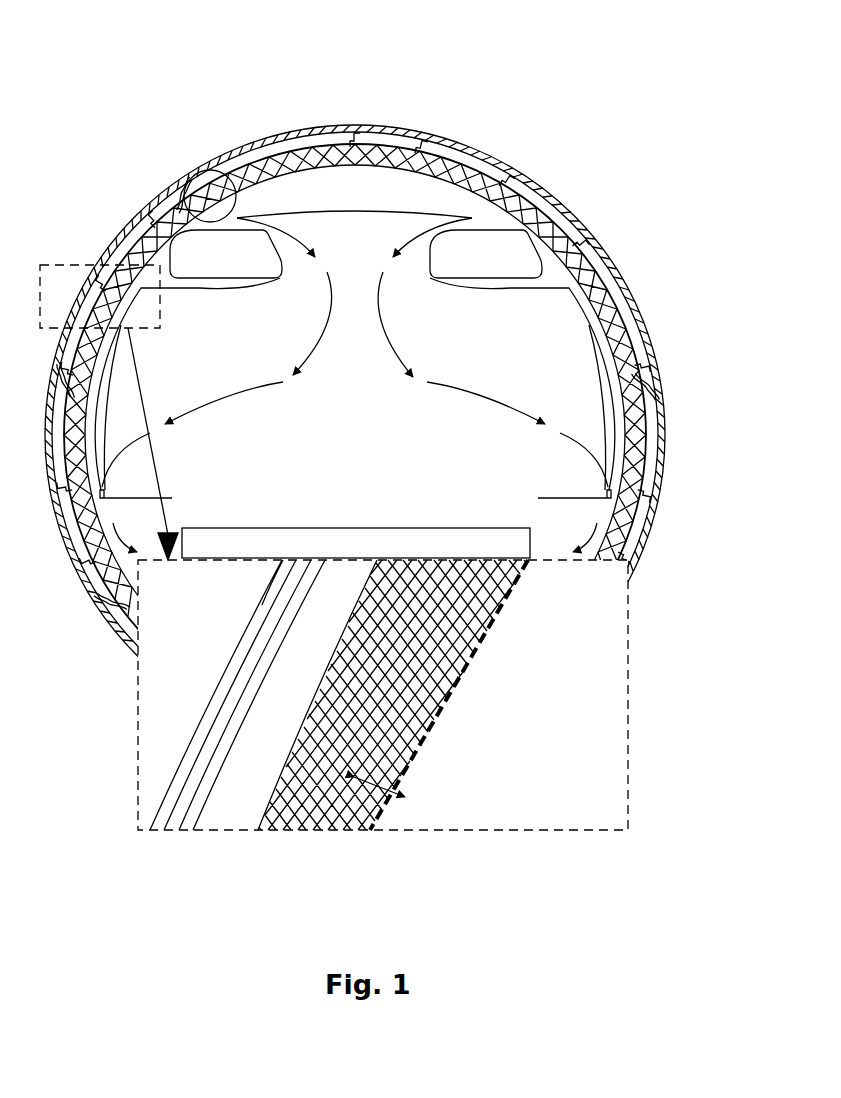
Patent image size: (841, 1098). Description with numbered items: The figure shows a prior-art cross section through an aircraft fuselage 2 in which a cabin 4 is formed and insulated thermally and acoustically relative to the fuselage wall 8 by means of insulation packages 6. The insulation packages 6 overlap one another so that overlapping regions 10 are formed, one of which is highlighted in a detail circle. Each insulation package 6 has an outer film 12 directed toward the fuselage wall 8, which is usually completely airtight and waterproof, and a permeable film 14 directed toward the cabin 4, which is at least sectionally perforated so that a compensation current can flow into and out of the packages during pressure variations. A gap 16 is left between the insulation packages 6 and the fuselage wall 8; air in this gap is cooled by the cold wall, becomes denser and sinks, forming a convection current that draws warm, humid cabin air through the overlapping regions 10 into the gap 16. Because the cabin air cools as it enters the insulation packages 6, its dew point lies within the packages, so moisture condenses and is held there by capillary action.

The aircraft fuselage 2 is at (533, 155).
The cabin 4 is at (355, 434).
The insulation packages 6 is at (585, 280).
The fuselage wall 8 is at (653, 368).
The overlapping regions 10 is at (196, 172).
The outer film 12 is at (122, 233).
The permeable film 14 is at (175, 257).
The gap 16 is at (237, 785).